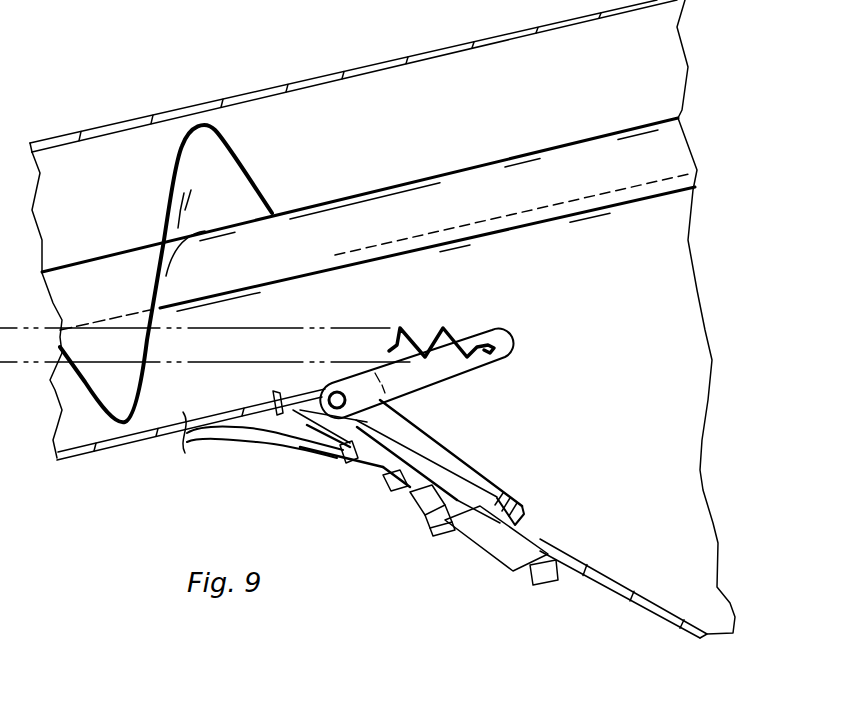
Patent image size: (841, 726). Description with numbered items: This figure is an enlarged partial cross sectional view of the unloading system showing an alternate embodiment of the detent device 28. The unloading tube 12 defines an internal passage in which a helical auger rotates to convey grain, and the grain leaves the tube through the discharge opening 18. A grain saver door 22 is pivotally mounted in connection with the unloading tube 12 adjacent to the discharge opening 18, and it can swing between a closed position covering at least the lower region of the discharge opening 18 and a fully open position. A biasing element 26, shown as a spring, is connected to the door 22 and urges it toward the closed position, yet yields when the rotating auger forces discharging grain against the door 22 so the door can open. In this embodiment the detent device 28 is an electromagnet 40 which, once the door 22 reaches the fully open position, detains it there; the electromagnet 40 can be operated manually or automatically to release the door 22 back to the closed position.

The unloading tube 12 is at (185, 103).
The discharge opening 18 is at (640, 339).
The grain saver door 22 is at (462, 460).
The biasing element 26 is at (414, 327).
The detent device 28 is at (437, 549).
The electromagnet 40 is at (493, 563).